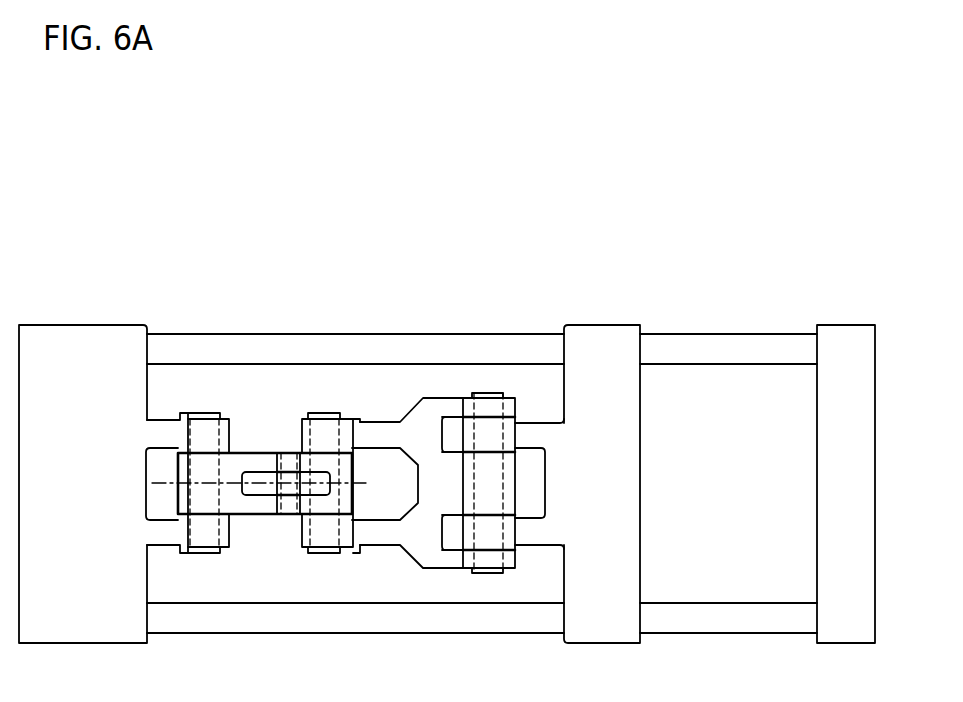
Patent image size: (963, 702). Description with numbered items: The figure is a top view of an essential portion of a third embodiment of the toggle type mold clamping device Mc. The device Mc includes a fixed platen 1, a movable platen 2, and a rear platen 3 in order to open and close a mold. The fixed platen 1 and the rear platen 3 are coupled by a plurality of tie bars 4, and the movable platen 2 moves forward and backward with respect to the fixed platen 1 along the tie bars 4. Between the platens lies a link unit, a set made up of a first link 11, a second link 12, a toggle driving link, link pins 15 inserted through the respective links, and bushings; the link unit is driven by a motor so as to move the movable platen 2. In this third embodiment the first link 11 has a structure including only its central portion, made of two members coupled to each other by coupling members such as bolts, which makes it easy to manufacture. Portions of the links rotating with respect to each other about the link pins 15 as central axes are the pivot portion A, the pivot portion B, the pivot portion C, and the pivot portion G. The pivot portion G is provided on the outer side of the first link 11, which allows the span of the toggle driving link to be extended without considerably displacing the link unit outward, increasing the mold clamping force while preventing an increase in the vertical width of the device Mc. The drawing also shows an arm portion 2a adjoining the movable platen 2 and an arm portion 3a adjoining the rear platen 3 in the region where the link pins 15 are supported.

The fixed platen 1 is at (840, 325).
The movable platen 2 is at (597, 325).
The frame arm 2a is at (533, 423).
The rear platen 3 is at (40, 324).
The block arm 3a is at (167, 426).
The tie bars 4 is at (703, 333).
The first link 11 is at (257, 452).
The second link 12 is at (373, 423).
The link pins 15 is at (206, 412).
The pivot portion A is at (300, 452).
The pivot portion B is at (253, 297).
The pivot portion C is at (470, 438).
The pivot portion G is at (276, 485).
The mold clamping device Mc is at (491, 190).